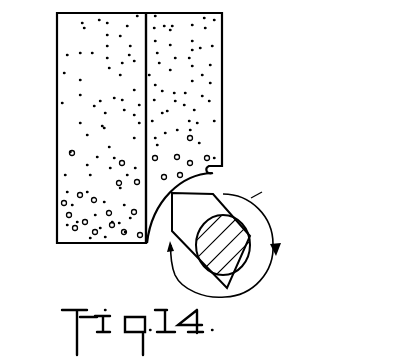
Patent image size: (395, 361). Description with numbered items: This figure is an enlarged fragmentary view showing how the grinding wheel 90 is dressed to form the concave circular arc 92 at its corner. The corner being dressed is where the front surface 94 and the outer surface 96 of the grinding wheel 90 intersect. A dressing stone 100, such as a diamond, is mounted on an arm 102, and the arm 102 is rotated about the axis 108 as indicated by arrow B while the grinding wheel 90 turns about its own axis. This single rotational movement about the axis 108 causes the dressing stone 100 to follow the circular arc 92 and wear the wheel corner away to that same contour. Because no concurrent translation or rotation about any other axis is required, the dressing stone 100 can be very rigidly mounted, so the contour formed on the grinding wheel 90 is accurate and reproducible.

The grinding wheel 90 is at (76, 240).
The circular arc 92 is at (212, 173).
The front surface 94 is at (222, 82).
The outer surface 96 is at (114, 243).
The dressing stone 100 is at (172, 194).
The arm 102 is at (240, 290).
The axis 108 is at (235, 244).
The arrow B is at (260, 184).